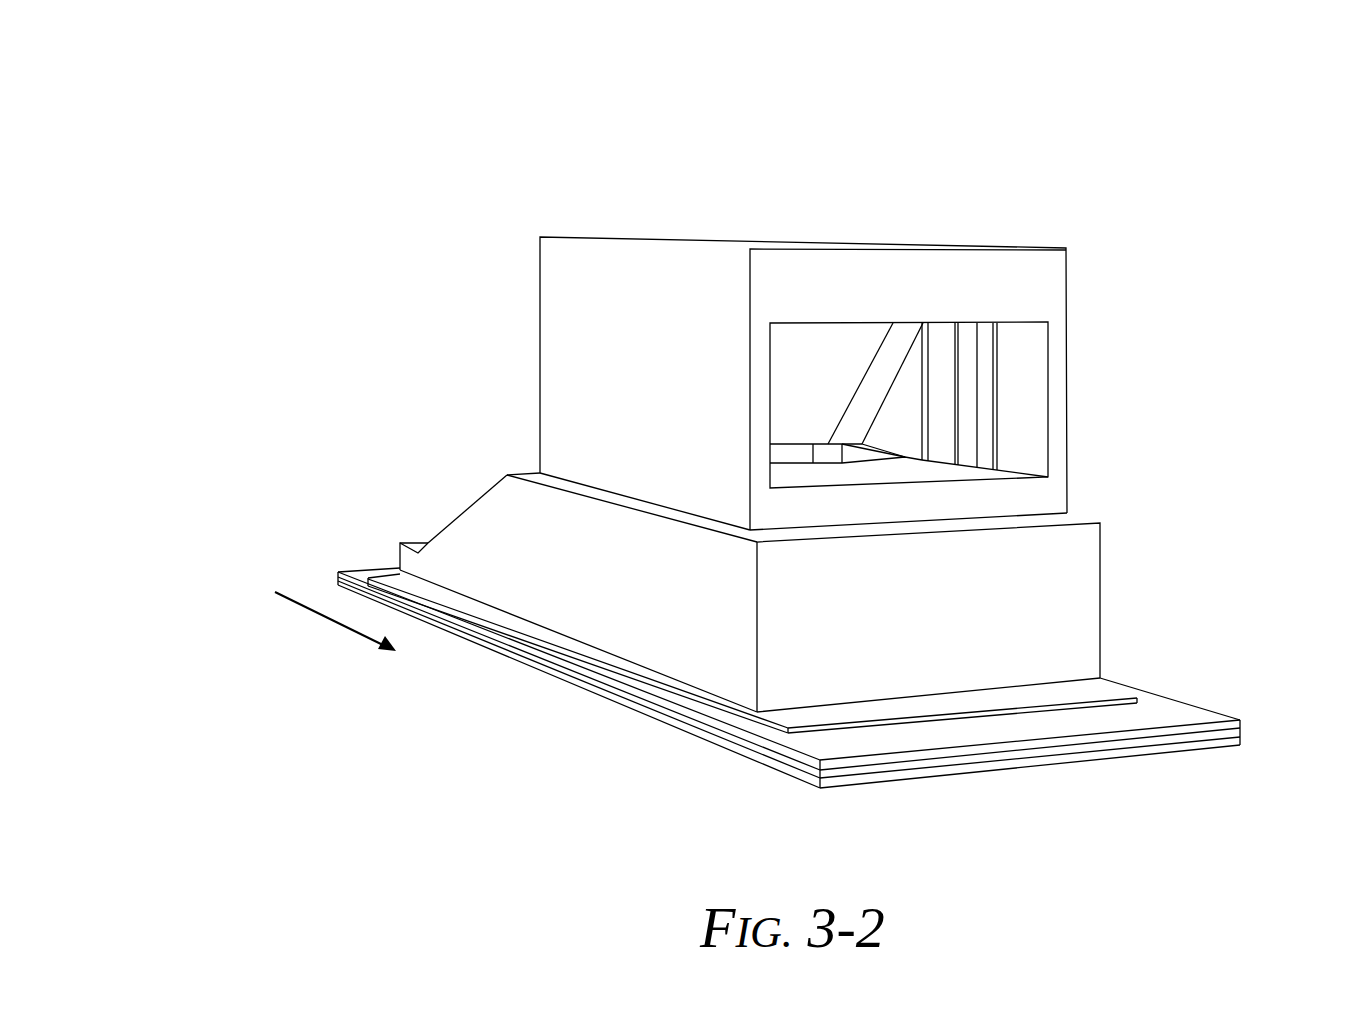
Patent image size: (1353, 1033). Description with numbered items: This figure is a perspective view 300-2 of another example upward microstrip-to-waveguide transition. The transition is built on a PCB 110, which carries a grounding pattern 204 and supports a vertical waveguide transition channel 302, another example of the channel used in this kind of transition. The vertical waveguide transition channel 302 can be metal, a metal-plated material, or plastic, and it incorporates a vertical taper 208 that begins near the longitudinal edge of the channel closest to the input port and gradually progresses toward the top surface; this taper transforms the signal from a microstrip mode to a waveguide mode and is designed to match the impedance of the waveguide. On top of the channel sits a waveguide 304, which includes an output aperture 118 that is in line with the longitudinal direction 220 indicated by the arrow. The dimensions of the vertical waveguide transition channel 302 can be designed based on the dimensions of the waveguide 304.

The perspective view 300-2 is at (234, 64).
The waveguide 304 is at (816, 264).
The output aperture 118 is at (1024, 370).
The vertical waveguide transition channel 302 is at (1082, 578).
The vertical taper 208 is at (462, 508).
The PCB 110 is at (352, 571).
The grounding pattern 204 is at (605, 653).
The longitudinal direction 220 is at (283, 648).